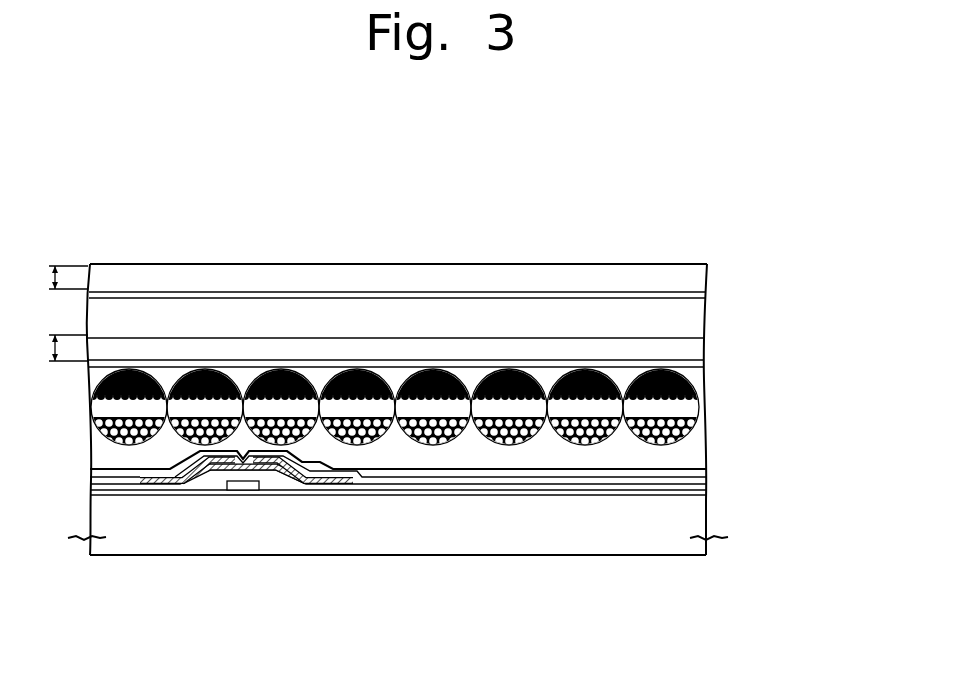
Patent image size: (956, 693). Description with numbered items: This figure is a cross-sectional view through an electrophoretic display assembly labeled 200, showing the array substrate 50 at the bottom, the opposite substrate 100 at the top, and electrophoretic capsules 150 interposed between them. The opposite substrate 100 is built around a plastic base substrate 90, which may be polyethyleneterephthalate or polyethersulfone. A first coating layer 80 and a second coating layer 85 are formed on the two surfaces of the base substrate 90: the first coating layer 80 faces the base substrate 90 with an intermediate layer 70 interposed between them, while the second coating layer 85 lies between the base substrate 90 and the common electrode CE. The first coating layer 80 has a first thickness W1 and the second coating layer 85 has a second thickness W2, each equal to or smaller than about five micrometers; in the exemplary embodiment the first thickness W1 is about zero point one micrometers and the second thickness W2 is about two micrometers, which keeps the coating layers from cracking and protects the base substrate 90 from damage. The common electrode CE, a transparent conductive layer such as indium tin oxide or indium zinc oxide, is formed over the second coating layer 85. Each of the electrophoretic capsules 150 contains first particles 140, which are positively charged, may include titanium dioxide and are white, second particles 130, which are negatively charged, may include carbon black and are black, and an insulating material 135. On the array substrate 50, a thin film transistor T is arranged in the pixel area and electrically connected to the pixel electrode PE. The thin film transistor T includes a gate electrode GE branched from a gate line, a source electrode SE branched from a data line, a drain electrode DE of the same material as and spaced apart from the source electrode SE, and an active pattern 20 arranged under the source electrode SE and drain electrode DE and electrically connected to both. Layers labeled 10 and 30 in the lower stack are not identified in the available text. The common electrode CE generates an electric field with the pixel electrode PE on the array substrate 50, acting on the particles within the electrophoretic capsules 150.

The display panel 200 is at (689, 208).
The opposite substrate 100 is at (788, 237).
The first coating layer 80 is at (697, 278).
The intermediate layer 70 is at (697, 297).
The base substrate 90 is at (690, 317).
The second coating layer 85 is at (697, 345).
The common electrode CE is at (697, 365).
The electrophoretic capsules 150 is at (802, 375).
The second particles 130 is at (695, 383).
The insulating material 135 is at (690, 407).
The first particles 140 is at (695, 432).
The pixel electrode PE is at (706, 472).
The gate insulating layer 30 is at (706, 483).
The buffer layer 10 is at (706, 490).
The array substrate 50 is at (706, 527).
The thin film transistor T is at (327, 593).
The source electrode SE is at (147, 483).
The active pattern 20 is at (197, 482).
The gate electrode GE is at (243, 490).
The drain electrode DE is at (318, 483).
The first thickness W1 is at (56, 278).
The second thickness W2 is at (56, 348).